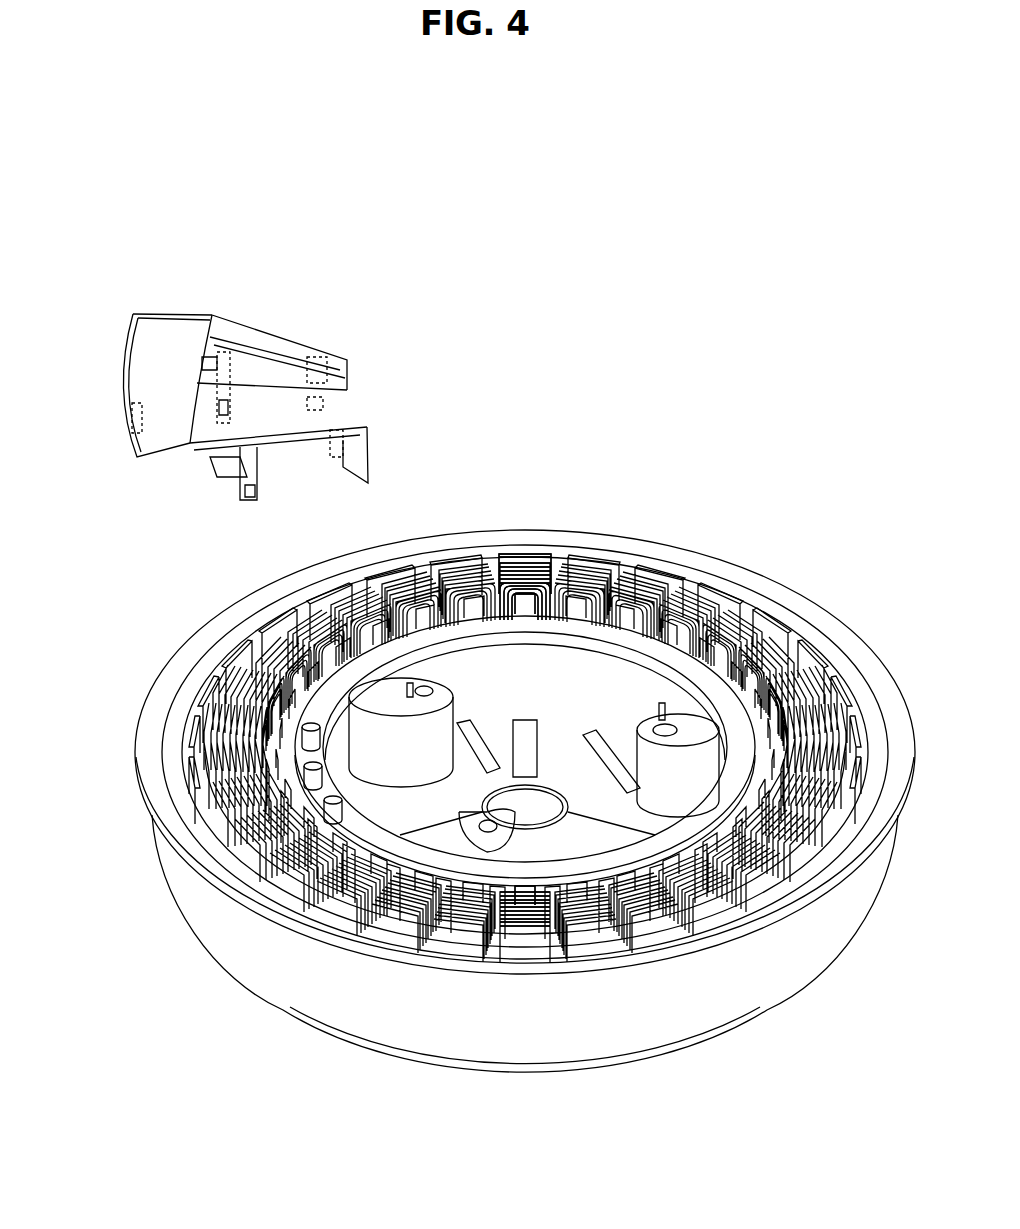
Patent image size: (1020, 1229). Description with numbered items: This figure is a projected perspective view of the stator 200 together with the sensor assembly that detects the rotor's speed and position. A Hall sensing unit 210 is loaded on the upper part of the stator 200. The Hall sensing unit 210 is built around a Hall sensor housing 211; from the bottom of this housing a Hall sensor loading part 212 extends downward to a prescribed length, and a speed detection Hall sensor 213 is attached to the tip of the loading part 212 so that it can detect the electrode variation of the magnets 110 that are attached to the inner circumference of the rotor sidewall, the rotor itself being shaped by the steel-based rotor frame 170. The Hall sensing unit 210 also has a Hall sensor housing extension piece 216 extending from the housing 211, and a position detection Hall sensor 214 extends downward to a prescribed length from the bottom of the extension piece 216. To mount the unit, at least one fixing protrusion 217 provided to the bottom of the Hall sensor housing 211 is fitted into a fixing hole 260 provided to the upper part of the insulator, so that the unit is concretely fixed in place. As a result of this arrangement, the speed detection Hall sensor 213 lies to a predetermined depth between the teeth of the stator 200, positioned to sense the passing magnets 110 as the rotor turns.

The magnets 110 is at (180, 718).
The rotor frame 170 is at (200, 900).
The stator 200 is at (620, 574).
The Hall sensing unit 210 is at (275, 271).
The Hall sensor housing 211 is at (290, 367).
The Hall sensor loading part 212 is at (243, 518).
The speed detection Hall sensor 213 is at (222, 418).
The position detection Hall sensor 214 is at (130, 418).
The Hall sensor housing extension piece 216 is at (160, 337).
The fixing protrusion 217 is at (337, 463).
The fixing hole 260 is at (310, 715).